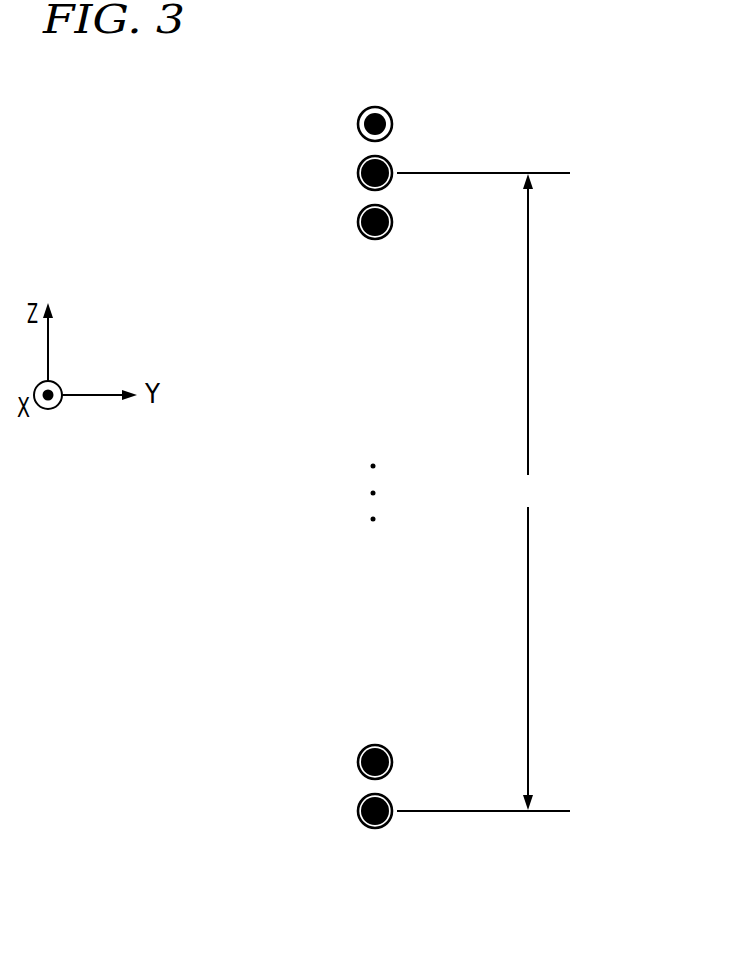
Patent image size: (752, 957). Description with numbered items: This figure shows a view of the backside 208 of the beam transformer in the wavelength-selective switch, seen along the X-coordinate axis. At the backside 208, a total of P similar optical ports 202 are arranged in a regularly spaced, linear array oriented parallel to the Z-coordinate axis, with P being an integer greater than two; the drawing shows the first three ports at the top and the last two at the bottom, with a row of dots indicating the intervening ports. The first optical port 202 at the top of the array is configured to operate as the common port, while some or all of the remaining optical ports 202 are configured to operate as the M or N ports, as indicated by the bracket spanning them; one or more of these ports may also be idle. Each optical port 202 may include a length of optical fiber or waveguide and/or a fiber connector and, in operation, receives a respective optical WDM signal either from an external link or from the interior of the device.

The backside 208 is at (132, 78).
The optical port 202 is at (322, 471).